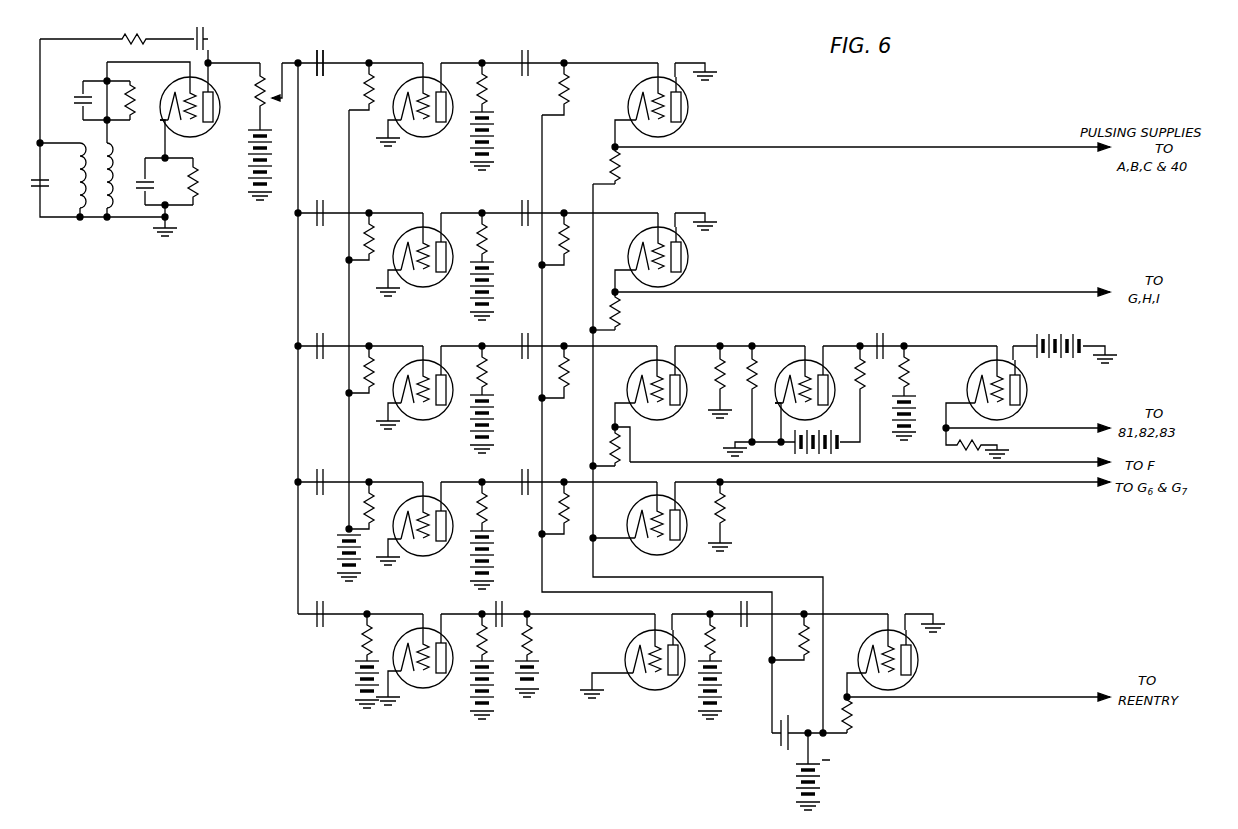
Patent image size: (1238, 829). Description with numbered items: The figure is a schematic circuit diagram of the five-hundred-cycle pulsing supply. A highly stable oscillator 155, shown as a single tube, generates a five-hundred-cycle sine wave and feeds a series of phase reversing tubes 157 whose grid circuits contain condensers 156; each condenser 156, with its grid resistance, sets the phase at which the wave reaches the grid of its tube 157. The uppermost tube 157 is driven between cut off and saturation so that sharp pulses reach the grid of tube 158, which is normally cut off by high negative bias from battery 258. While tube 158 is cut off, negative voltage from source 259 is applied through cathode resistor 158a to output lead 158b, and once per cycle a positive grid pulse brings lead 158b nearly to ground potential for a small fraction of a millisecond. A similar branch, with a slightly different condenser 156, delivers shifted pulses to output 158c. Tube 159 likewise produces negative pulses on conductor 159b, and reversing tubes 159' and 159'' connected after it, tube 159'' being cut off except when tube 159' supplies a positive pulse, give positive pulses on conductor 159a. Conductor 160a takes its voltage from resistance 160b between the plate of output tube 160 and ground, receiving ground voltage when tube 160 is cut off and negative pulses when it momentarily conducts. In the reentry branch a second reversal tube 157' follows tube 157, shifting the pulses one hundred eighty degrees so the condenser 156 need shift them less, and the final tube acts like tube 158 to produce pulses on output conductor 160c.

The oscillator 155 is at (208, 85).
The condenser 156 is at (325, 53).
The phase reversing tube 157 is at (431, 82).
The second reversal tube 157' is at (652, 670).
The tube 158 is at (662, 77).
The cathode resistor 158a is at (623, 168).
The output lead 158b is at (817, 150).
The output 158c is at (817, 279).
The tube 159 is at (657, 369).
The reversing tube 159' is at (806, 369).
The reversing tube 159'' is at (997, 370).
The conductor 159a is at (1077, 419).
The conductor 159b is at (1077, 454).
The output tube 160 is at (667, 545).
The conductor 160a is at (1046, 485).
The resistance 160b is at (728, 528).
The output conductor 160c is at (1052, 690).
The battery 258 is at (781, 747).
The source 259 is at (823, 789).